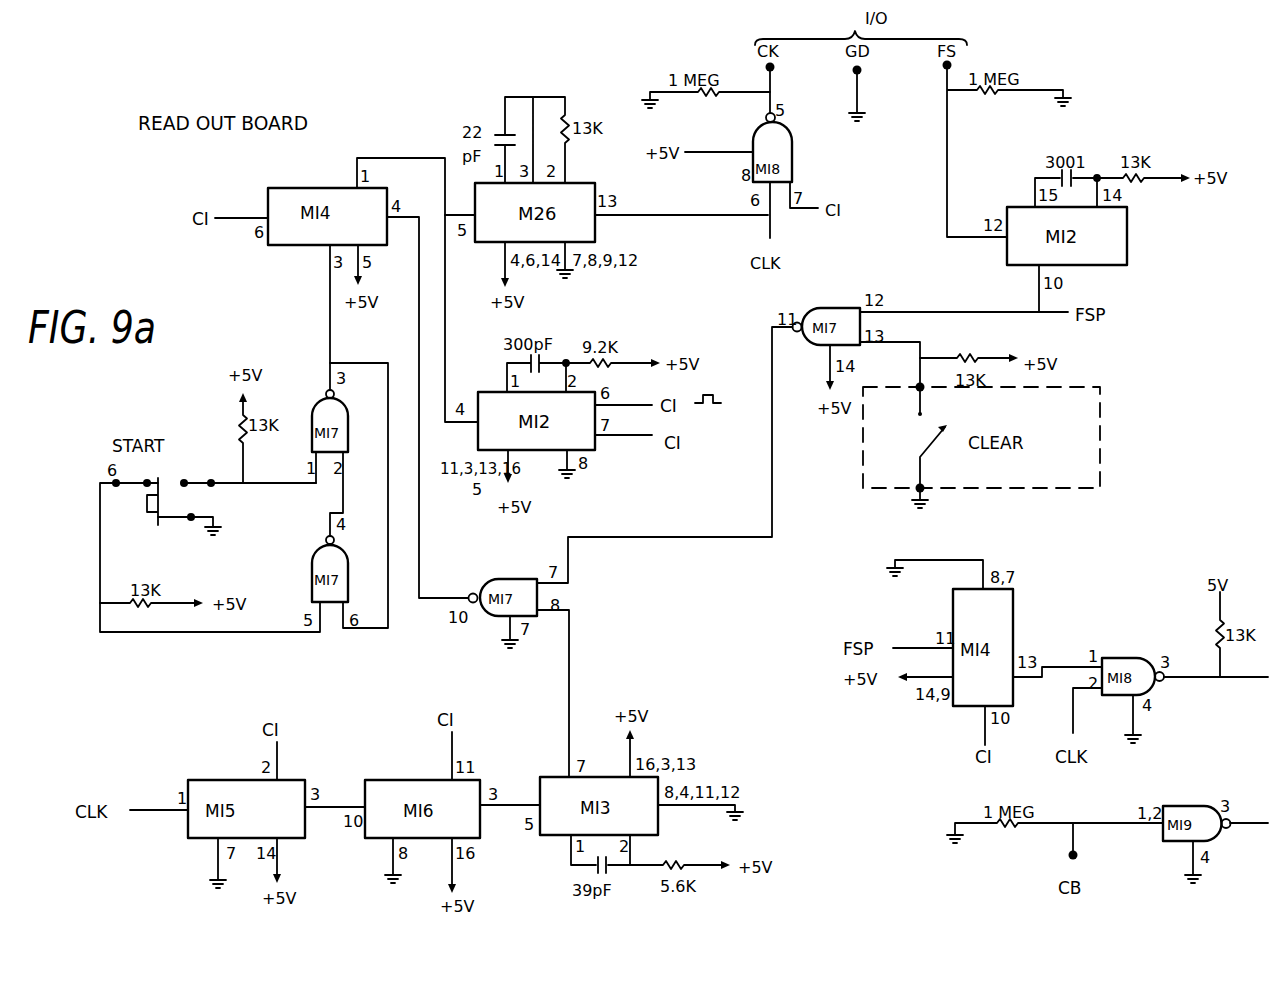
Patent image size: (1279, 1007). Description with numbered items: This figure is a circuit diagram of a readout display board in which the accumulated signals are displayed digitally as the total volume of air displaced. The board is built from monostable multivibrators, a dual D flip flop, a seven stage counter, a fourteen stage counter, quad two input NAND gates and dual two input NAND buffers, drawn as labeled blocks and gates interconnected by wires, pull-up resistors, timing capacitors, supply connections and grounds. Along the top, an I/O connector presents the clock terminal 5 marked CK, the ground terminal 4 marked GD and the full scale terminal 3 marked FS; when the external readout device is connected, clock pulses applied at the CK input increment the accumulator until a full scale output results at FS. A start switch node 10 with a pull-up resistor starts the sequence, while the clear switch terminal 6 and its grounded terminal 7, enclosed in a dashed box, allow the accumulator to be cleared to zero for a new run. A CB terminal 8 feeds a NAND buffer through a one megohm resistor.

The FS terminal of I/O connector 3 is at (985, 148).
The GD ground terminal of I/O connector 4 is at (841, 88).
The CK clock terminal of I/O connector 5 is at (751, 88).
The clear switch terminal 6 is at (932, 400).
The clear switch ground terminal 7 is at (931, 467).
The CB terminal 8 is at (1089, 846).
The start switch node 10 is at (226, 442).